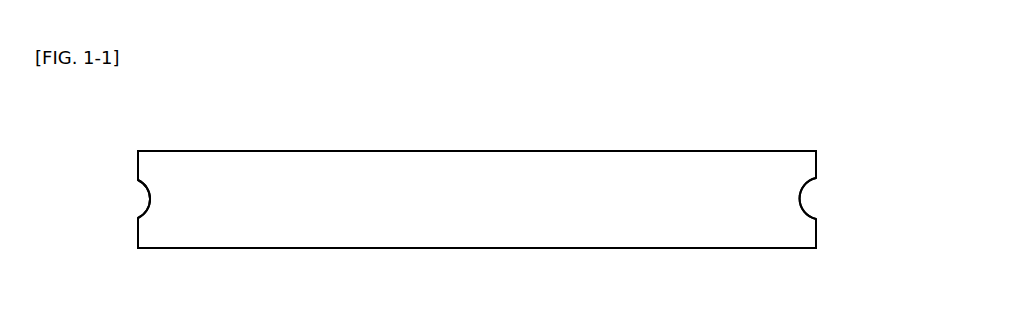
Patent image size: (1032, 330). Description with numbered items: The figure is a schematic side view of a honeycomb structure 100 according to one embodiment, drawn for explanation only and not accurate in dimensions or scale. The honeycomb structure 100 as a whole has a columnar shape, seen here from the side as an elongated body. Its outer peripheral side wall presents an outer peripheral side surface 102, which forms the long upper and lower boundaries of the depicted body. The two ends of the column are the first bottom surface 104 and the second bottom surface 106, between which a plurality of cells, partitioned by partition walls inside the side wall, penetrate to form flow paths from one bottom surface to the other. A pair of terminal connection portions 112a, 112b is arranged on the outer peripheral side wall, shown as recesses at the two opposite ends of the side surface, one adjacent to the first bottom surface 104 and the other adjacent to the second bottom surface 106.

The honeycomb structure 100 is at (166, 136).
The outer peripheral side surface 102 is at (138, 237).
The first bottom surface 104 is at (425, 151).
The second bottom surface 106 is at (444, 248).
The terminal connection portion 112a is at (138, 202).
The terminal connection portion 112b is at (818, 197).